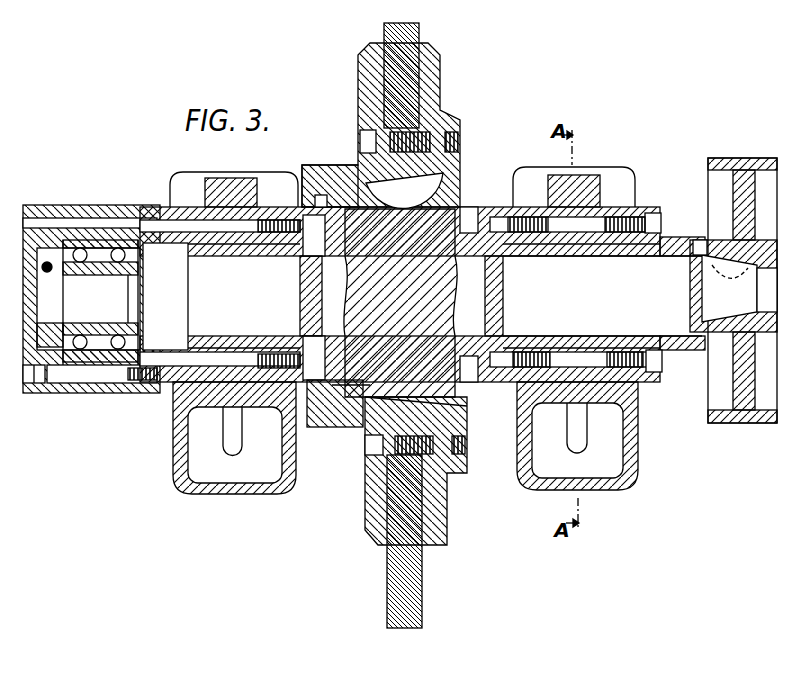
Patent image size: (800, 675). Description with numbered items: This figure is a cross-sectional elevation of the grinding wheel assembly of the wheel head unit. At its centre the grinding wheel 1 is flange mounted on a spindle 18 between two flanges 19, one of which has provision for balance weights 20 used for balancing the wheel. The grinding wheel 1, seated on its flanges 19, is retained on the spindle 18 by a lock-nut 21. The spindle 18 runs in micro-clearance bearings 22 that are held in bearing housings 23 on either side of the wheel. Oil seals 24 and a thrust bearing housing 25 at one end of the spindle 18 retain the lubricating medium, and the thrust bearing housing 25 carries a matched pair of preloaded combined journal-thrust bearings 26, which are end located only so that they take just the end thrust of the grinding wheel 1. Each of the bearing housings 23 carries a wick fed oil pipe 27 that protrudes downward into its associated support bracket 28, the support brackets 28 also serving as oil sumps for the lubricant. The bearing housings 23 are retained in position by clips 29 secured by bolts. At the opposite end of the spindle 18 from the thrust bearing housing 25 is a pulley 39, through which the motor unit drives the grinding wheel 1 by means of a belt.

The grinding wheel 1 is at (427, 570).
The spindle 18 is at (602, 296).
The flanges 19 is at (367, 90).
The balance weights 20 is at (462, 139).
The lock-nut 21 is at (332, 165).
The micro-clearance bearings 22 is at (235, 340).
The bearing housings 23 is at (246, 356).
The oil seals 24 is at (352, 322).
The thrust bearing housing 25 is at (101, 392).
The combined journal-thrust bearings 26 is at (110, 275).
The wick fed oil pipes 27 is at (243, 436).
The support brackets 28 is at (405, 438).
The clips 29 is at (235, 183).
The pulley 39 is at (740, 424).